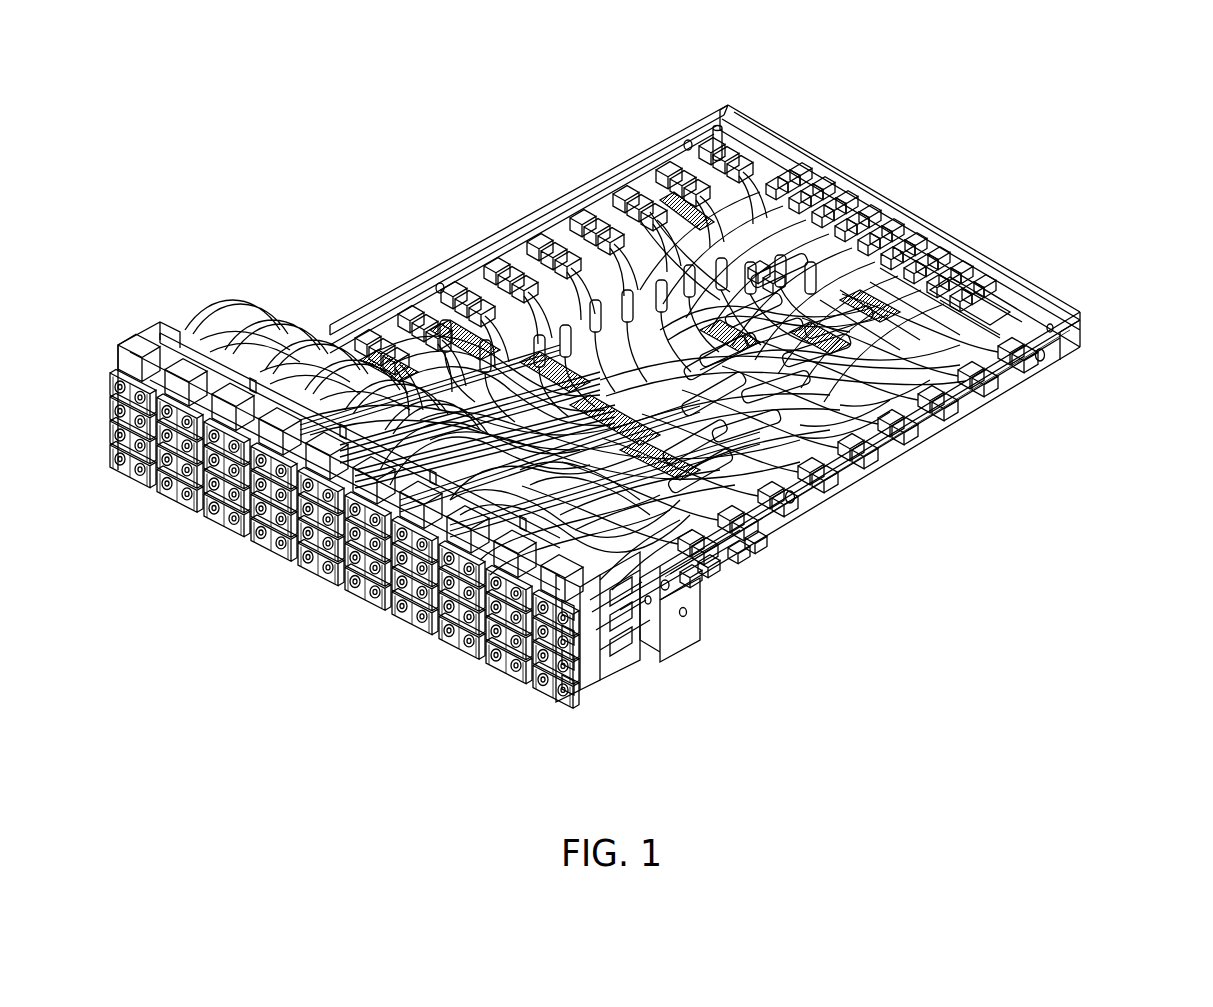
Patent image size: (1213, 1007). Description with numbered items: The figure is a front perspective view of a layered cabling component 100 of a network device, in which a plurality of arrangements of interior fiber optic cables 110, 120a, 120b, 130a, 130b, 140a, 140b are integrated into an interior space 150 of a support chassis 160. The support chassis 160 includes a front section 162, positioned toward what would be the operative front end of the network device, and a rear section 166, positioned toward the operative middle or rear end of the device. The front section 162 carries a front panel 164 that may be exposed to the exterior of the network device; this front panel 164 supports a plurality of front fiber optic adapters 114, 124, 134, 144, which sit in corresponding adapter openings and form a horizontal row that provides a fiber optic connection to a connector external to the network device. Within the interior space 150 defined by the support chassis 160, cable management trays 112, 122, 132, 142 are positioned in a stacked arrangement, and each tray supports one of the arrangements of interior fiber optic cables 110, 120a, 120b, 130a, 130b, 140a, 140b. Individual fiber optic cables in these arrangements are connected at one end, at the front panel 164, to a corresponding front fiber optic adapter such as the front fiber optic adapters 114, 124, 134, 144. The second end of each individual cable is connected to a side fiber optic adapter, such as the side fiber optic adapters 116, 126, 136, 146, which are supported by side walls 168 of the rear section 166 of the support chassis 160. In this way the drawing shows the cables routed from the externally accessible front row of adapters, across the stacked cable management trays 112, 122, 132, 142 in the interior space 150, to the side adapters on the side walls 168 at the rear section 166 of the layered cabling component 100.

The layered cabling component 100 is at (955, 78).
The interior fiber optic cables 110 is at (872, 195).
The cable management tray 112 is at (747, 265).
The front fiber optic adapter 114 is at (522, 686).
The side fiber optic adapter 116 is at (970, 300).
The interior fiber optic cables 120a is at (607, 170).
The interior fiber optic cables 120b is at (948, 426).
The cable management tray 122 is at (693, 213).
The front fiber optic adapter 124 is at (546, 650).
The side fiber optic adapter 126 is at (577, 190).
The interior fiber optic cables 130a is at (517, 247).
The interior fiber optic cables 130b is at (872, 470).
The cable management tray 132 is at (457, 293).
The front fiber optic adapter 134 is at (602, 602).
The side fiber optic adapter 136 is at (490, 243).
The interior fiber optic cables 140a is at (410, 287).
The interior fiber optic cables 140b is at (772, 527).
The cable management tray 142 is at (742, 560).
The front fiber optic adapter 144 is at (462, 622).
The side fiber optic adapter 146 is at (348, 328).
The interior space 150 is at (1006, 320).
The support chassis 160 is at (822, 513).
The front section 162 is at (703, 620).
The front panel 164 is at (124, 340).
The rear section 166 is at (1092, 297).
The side walls 168 is at (1030, 368).